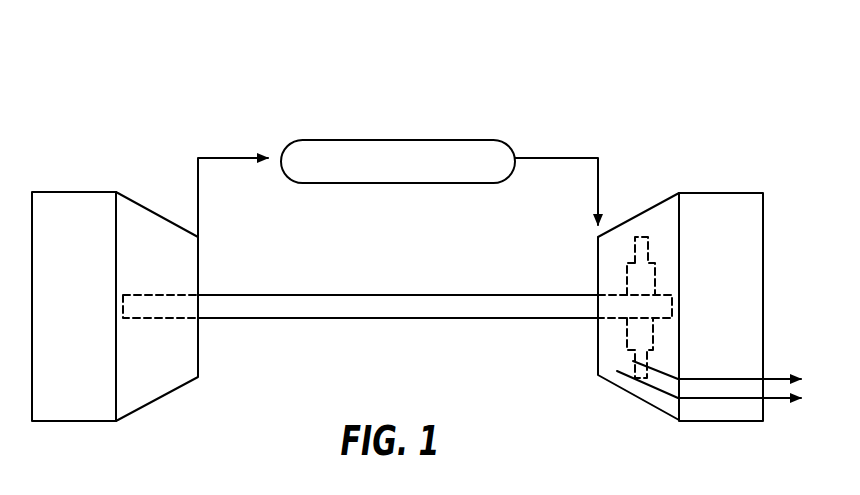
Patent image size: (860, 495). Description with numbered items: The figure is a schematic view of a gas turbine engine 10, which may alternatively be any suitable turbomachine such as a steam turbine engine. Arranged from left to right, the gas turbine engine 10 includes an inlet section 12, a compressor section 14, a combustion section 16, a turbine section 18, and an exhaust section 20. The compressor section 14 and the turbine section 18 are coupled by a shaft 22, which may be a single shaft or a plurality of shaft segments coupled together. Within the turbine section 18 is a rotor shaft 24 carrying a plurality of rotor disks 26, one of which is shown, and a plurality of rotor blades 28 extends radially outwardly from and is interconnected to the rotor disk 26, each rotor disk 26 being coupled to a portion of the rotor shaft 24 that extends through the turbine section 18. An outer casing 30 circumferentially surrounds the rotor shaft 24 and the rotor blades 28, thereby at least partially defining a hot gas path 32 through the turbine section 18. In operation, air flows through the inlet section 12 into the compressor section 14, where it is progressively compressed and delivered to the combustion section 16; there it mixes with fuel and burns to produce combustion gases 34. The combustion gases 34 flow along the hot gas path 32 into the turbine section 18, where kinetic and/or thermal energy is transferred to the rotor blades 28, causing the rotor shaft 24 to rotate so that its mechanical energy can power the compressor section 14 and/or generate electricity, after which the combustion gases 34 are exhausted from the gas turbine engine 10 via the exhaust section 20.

The gas turbine engine 10 is at (245, 79).
The inlet section 12 is at (48, 192).
The compressor section 14 is at (142, 206).
The combustion section 16 is at (452, 140).
The turbine section 18 is at (663, 202).
The exhaust section 20 is at (738, 193).
The shaft 22 is at (357, 318).
The rotor shaft 24 is at (667, 295).
The rotor disk 26 is at (625, 283).
The rotor blades 28 is at (632, 238).
The outer casing 30 is at (660, 413).
The hot gas path 32 is at (640, 380).
The combustion gases 34 is at (542, 158).